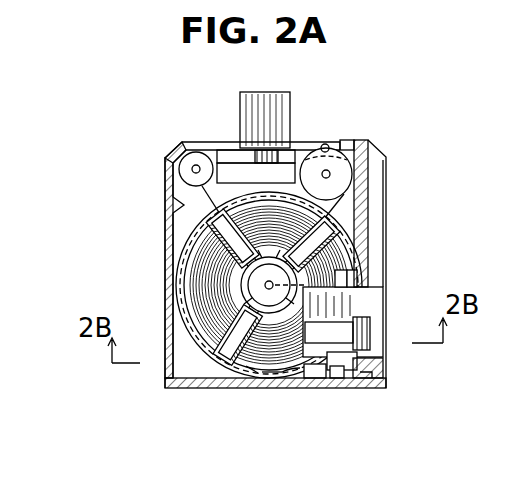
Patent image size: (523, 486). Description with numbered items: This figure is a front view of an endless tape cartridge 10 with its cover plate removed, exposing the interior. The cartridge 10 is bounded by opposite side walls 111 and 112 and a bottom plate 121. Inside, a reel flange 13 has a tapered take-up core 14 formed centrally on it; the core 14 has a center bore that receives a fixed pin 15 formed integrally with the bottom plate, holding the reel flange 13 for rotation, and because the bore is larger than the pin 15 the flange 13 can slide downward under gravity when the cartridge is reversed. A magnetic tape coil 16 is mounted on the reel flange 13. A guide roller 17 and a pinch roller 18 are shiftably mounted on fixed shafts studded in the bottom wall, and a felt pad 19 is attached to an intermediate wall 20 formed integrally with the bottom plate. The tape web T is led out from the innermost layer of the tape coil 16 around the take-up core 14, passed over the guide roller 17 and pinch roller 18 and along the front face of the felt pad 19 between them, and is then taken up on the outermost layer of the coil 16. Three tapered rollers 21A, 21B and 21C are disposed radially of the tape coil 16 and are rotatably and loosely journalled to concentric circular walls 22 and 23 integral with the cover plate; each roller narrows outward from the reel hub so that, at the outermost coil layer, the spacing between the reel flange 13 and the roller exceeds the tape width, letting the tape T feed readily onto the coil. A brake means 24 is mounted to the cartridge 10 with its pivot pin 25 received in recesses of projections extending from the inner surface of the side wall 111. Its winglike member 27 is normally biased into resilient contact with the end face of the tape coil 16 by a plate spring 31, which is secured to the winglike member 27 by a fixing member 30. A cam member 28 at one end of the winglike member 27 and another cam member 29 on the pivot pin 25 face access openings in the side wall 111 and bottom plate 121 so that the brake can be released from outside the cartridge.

The endless tape cartridge 10 is at (330, 140).
The side wall 111 is at (381, 166).
The side wall 112 is at (170, 174).
The bottom plate 121 is at (186, 382).
The reel flange 13 is at (318, 374).
The tapered core 14 is at (254, 372).
The fixed pin 15 is at (255, 284).
The magnetic tape coil 16 is at (205, 301).
The guide roller 17 is at (192, 160).
The pinch roller 18 is at (342, 166).
The felt pad 19 is at (270, 150).
The intermediate wall 20 is at (232, 172).
The tapered roller 21A is at (236, 337).
The tapered roller 21B is at (356, 236).
The tapered roller 21C is at (178, 212).
The concentric circular wall 22 is at (300, 374).
The concentric circular wall 23 is at (283, 371).
The brake means 24 is at (350, 278).
The pivot pin 25 is at (352, 369).
The winglike member 27 is at (330, 312).
The cam member 28 is at (372, 352).
The cam member 29 is at (370, 373).
The fixing member 30 is at (352, 338).
The plate spring 31 is at (338, 378).
The tape web T is at (186, 256).